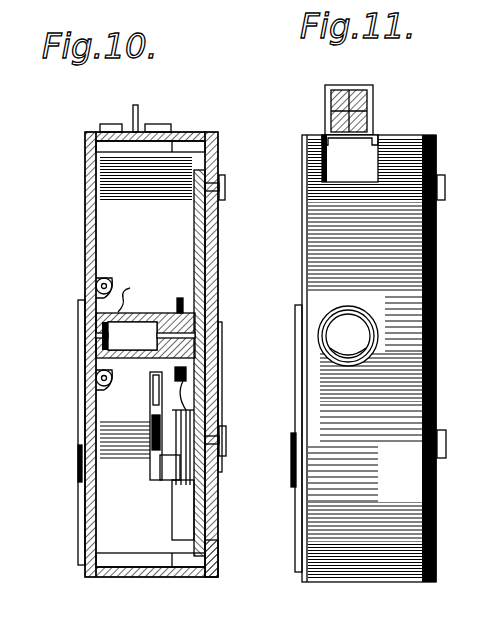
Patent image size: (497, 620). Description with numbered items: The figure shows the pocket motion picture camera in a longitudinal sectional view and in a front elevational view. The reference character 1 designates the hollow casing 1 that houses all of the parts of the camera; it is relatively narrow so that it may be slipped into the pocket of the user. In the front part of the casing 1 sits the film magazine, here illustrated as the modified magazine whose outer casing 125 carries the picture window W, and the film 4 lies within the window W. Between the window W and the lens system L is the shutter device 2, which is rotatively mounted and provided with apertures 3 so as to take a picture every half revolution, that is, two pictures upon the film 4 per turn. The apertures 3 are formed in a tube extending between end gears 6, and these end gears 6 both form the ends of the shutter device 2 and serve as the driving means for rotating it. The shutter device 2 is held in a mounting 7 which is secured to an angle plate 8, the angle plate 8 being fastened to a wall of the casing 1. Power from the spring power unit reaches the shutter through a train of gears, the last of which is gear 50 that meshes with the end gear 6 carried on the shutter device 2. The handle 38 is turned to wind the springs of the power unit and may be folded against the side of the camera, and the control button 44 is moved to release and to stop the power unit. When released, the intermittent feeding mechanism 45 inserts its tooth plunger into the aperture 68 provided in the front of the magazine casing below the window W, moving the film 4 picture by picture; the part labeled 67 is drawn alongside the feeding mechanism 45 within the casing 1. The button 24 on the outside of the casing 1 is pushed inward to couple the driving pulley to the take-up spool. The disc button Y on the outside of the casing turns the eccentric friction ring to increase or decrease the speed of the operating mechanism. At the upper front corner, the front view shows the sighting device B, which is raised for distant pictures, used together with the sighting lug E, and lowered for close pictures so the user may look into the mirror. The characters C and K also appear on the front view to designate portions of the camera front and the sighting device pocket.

In FIG. 10, the hollow casing 1 is at (85, 198).
In FIG. 11, the hollow casing 1 is at (320, 252).
In FIG. 10, the shutter device 2 is at (168, 312).
In FIG. 10, the apertures 3 is at (90, 100).
In FIG. 11, the film 4 is at (333, 65).
In FIG. 10, the end gears 6 is at (184, 306).
In FIG. 10, the mounting 7 is at (100, 282).
In FIG. 10, the angle plate 8 is at (194, 232).
In FIG. 10, the button 24 is at (226, 446).
In FIG. 11, the button 24 is at (447, 438).
In FIG. 10, the handle 38 is at (80, 526).
In FIG. 11, the handle 38 is at (298, 366).
In FIG. 10, the control button 44 is at (225, 188).
In FIG. 11, the control button 44 is at (446, 190).
In FIG. 10, the intermittent feeding mechanism 45 is at (172, 480).
In FIG. 10, the gear 50 is at (190, 396).
In FIG. 10, the bar 67 is at (152, 416).
In FIG. 10, the aperture 68 is at (150, 392).
In FIG. 10, the outer casing 125 is at (96, 140).
In FIG. 11, the sighting device B is at (373, 108).
In FIG. 10, the casing wall C is at (218, 528).
In FIG. 11, the casing wall C is at (436, 157).
In FIG. 10, the sighting lug E is at (138, 112).
In FIG. 11, the pocket K is at (350, 158).
In FIG. 11, the lens system L is at (346, 314).
In FIG. 10, the window W is at (130, 290).
In FIG. 10, the disc button Y is at (222, 379).